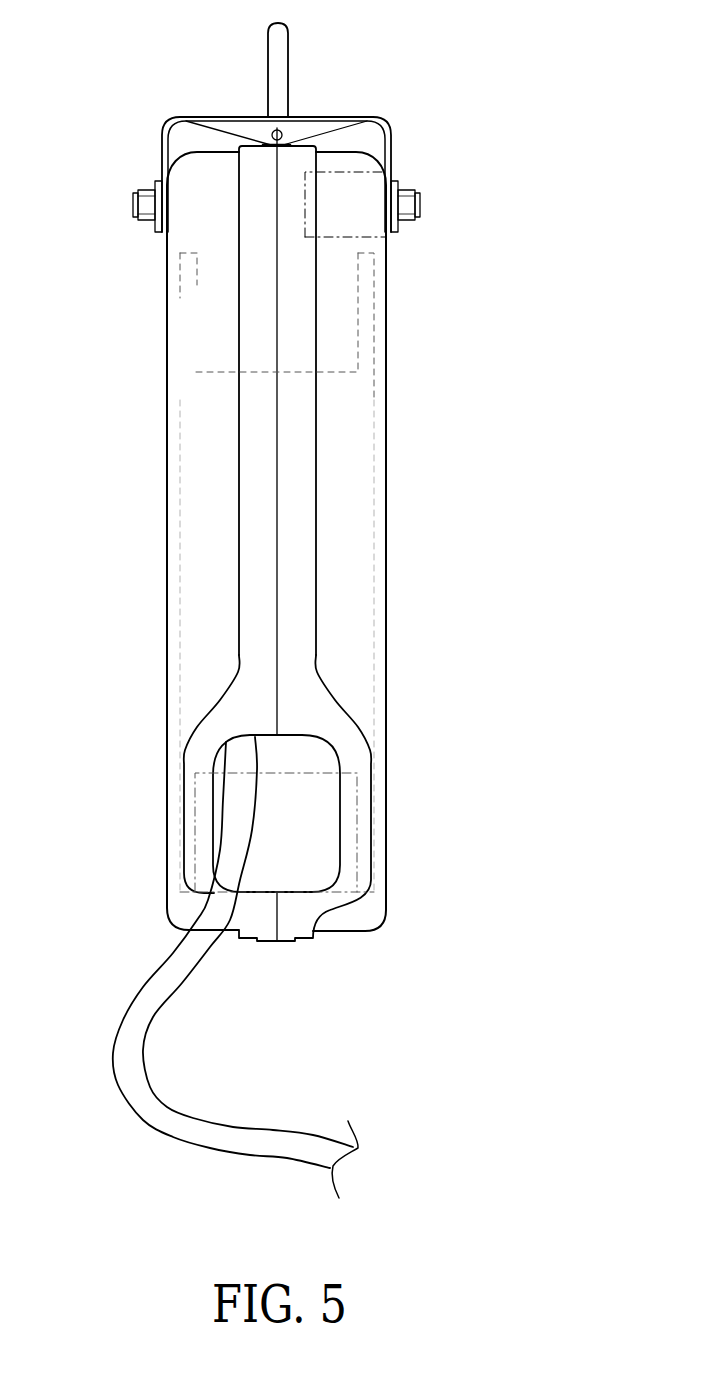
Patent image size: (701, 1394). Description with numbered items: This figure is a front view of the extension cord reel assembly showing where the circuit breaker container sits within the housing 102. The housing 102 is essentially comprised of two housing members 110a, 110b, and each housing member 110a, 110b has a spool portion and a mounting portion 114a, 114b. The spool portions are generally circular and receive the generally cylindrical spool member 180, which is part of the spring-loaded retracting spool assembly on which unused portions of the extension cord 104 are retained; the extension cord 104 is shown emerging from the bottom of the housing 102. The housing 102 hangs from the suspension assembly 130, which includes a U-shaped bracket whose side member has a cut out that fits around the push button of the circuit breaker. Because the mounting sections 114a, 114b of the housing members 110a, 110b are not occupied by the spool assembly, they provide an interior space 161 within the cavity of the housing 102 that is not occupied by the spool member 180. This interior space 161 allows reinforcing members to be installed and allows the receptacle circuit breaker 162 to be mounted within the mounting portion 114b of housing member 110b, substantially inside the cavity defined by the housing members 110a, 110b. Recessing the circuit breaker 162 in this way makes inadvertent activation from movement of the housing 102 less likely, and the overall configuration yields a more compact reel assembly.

The housing 102 is at (404, 467).
The extension cord 104 is at (180, 985).
The housing member 110a is at (167, 645).
The housing member 110b is at (387, 587).
The mounting portion 114a is at (188, 190).
The mounting portion 114b is at (367, 195).
The suspension assembly 130 is at (371, 50).
The interior space 161 is at (205, 553).
The receptacle circuit breaker 162 is at (367, 222).
The spool member 180 is at (180, 723).